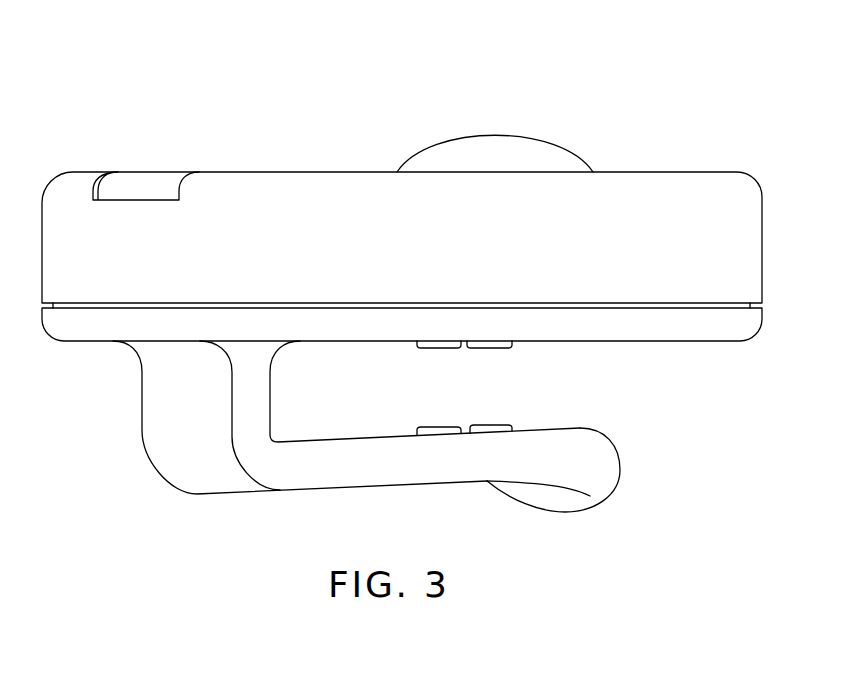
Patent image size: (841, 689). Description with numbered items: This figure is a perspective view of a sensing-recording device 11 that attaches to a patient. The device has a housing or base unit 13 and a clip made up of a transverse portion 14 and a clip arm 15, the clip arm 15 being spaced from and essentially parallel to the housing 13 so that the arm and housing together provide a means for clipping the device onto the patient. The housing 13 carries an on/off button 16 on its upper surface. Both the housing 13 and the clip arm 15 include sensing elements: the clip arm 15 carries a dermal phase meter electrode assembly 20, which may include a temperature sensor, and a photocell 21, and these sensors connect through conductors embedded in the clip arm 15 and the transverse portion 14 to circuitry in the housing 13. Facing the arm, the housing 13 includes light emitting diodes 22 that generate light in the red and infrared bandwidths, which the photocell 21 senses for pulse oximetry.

The sensing-recording device 11 is at (283, 109).
The housing 13 is at (762, 230).
The transverse portion 14 is at (162, 417).
The clip arm 15 is at (407, 489).
The on/off button 16 is at (520, 135).
The dermal phase meter electrode assembly 20 is at (447, 427).
The photocell 21 is at (490, 425).
The light emitting diodes 22 is at (447, 348).